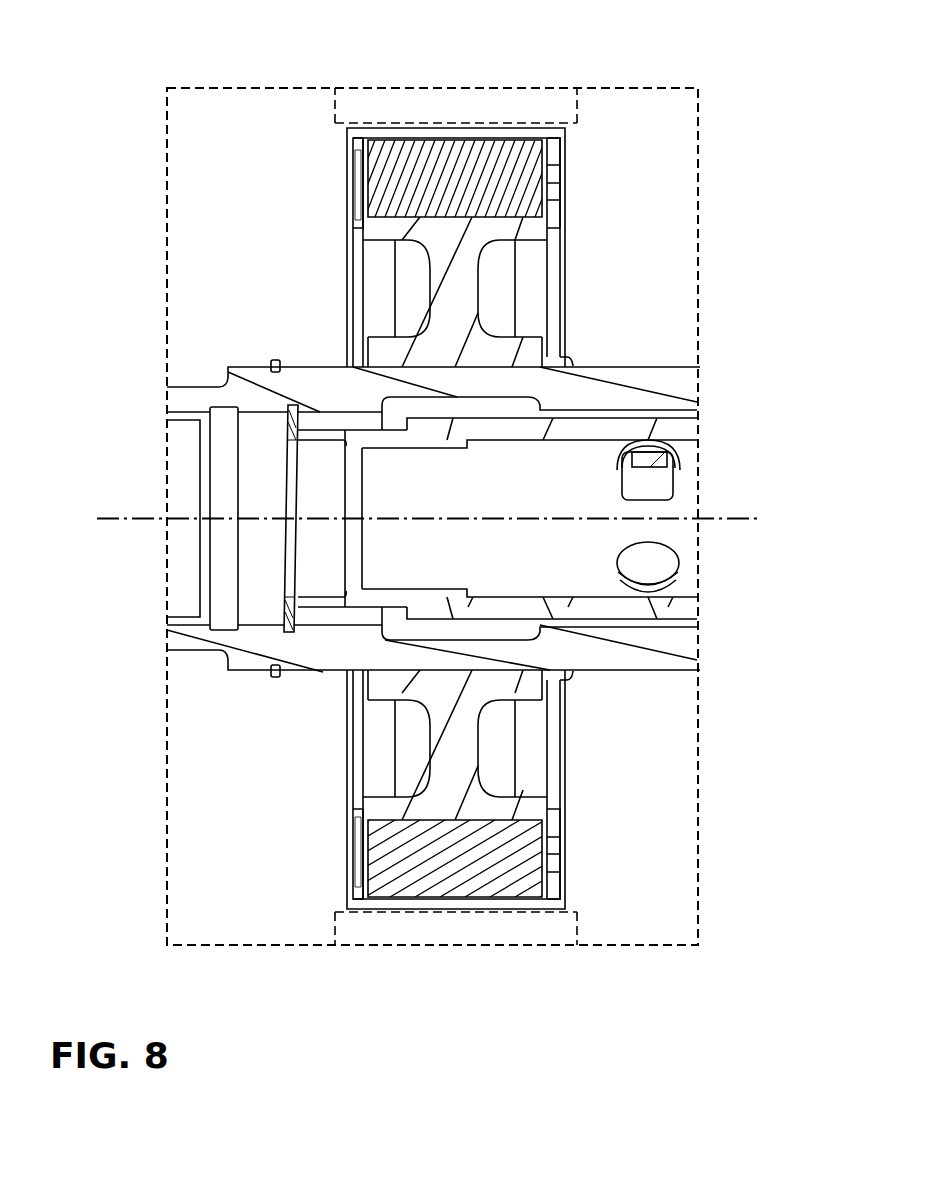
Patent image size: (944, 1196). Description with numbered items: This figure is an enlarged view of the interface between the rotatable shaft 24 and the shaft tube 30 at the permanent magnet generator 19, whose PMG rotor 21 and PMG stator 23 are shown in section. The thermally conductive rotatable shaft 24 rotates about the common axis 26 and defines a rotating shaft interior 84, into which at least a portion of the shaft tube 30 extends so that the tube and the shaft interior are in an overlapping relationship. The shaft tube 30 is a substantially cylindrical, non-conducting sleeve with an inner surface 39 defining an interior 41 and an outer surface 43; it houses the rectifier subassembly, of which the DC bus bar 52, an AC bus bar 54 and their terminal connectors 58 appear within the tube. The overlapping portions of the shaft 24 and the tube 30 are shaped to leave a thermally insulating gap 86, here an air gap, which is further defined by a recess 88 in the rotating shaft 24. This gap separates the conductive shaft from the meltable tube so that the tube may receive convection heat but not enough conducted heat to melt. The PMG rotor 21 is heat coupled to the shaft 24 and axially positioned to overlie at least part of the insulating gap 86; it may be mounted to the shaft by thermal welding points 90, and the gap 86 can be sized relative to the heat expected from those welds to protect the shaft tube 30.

The permanent magnet generator 19 is at (587, 267).
The PMG rotor 21 is at (467, 290).
The PMG stator 23 is at (423, 107).
The rotatable shaft 24 is at (255, 385).
The common axis 26 is at (132, 530).
The shaft tube 30 is at (628, 423).
The inner surface 39 is at (558, 589).
The interior 41 is at (617, 522).
The outer surface 43 is at (601, 400).
The DC bus bar 52 is at (688, 570).
The AC bus bar 54 is at (676, 482).
The terminal connector 58 is at (673, 442).
The rotating shaft interior 84 is at (335, 421).
The thermally insulating gap 86 is at (497, 404).
The recess 88 is at (417, 382).
The thermal welding point 90 is at (363, 365).